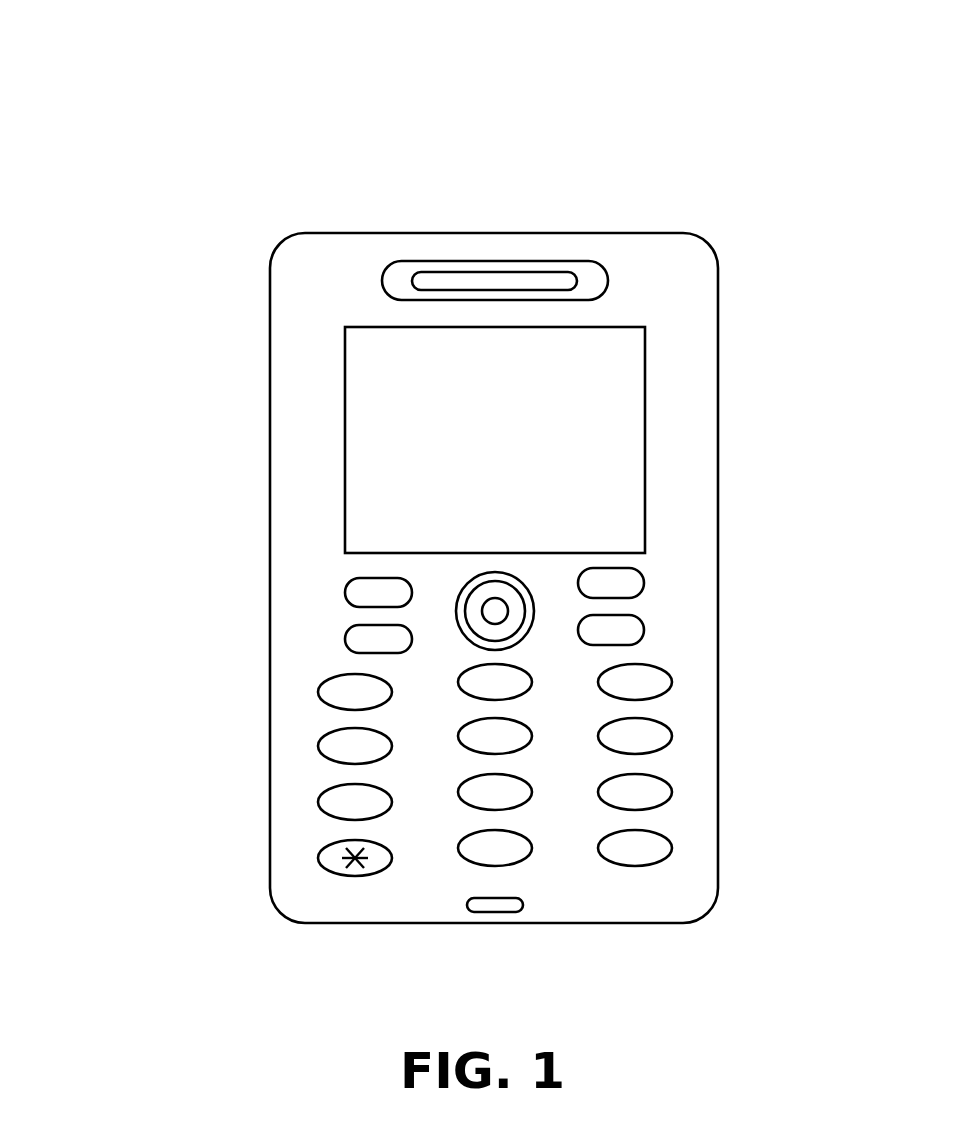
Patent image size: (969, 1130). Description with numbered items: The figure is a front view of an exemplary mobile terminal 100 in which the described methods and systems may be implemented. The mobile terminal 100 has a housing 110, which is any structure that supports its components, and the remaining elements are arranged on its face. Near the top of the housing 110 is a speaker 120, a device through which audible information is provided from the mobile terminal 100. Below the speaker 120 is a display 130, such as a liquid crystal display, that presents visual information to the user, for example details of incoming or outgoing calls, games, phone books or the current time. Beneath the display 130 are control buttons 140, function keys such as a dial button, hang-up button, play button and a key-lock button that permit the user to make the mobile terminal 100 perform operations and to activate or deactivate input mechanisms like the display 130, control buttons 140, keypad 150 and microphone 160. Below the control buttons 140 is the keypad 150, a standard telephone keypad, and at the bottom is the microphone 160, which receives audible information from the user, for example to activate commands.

The mobile terminal 100 is at (168, 58).
The housing 110 is at (270, 270).
The speaker 120 is at (608, 280).
The display 130 is at (644, 438).
The control buttons 140 is at (737, 568).
The keypad 150 is at (737, 885).
The microphone 160 is at (495, 912).